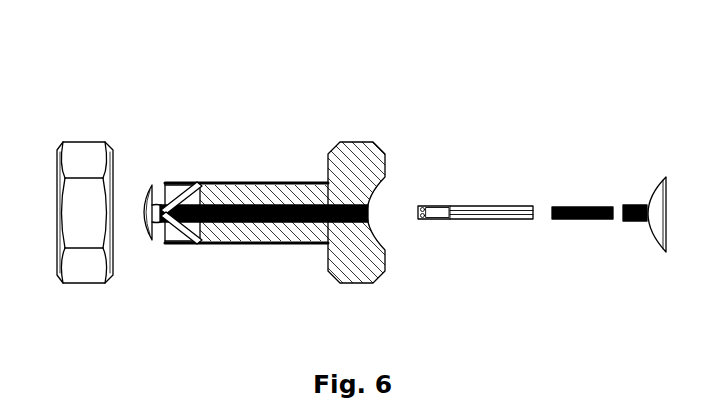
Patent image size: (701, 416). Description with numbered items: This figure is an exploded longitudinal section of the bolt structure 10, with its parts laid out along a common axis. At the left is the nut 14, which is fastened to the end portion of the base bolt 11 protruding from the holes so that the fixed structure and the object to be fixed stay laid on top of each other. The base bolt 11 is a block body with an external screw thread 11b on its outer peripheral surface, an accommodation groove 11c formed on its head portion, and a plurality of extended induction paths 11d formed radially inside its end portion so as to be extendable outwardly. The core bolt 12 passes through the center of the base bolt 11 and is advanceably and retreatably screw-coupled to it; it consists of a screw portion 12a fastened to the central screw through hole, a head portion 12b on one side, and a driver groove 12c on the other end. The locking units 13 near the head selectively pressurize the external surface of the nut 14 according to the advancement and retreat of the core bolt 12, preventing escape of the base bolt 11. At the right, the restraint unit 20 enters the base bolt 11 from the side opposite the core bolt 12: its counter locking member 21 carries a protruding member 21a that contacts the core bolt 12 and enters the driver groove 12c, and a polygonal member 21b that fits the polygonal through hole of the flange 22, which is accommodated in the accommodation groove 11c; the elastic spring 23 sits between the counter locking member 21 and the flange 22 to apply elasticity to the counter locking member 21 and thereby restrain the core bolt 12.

The bolt structure 10 is at (82, 103).
The base bolt 11 is at (312, 238).
The external screw thread 11b is at (300, 246).
The accommodation groove 11c is at (385, 240).
The extended induction paths 11d is at (216, 244).
The core bolt 12 is at (270, 103).
The screw portion 12a is at (221, 196).
The head portion 12b is at (142, 198).
The driver groove 12c is at (244, 196).
The locking units 13 is at (177, 246).
The nut 14 is at (88, 268).
The restraint unit 20 is at (610, 103).
The counter locking member 21 is at (495, 186).
The protruding member 21a is at (420, 205).
The polygonal member 21b is at (533, 215).
The flange 22 is at (655, 185).
The elastic spring 23 is at (583, 205).